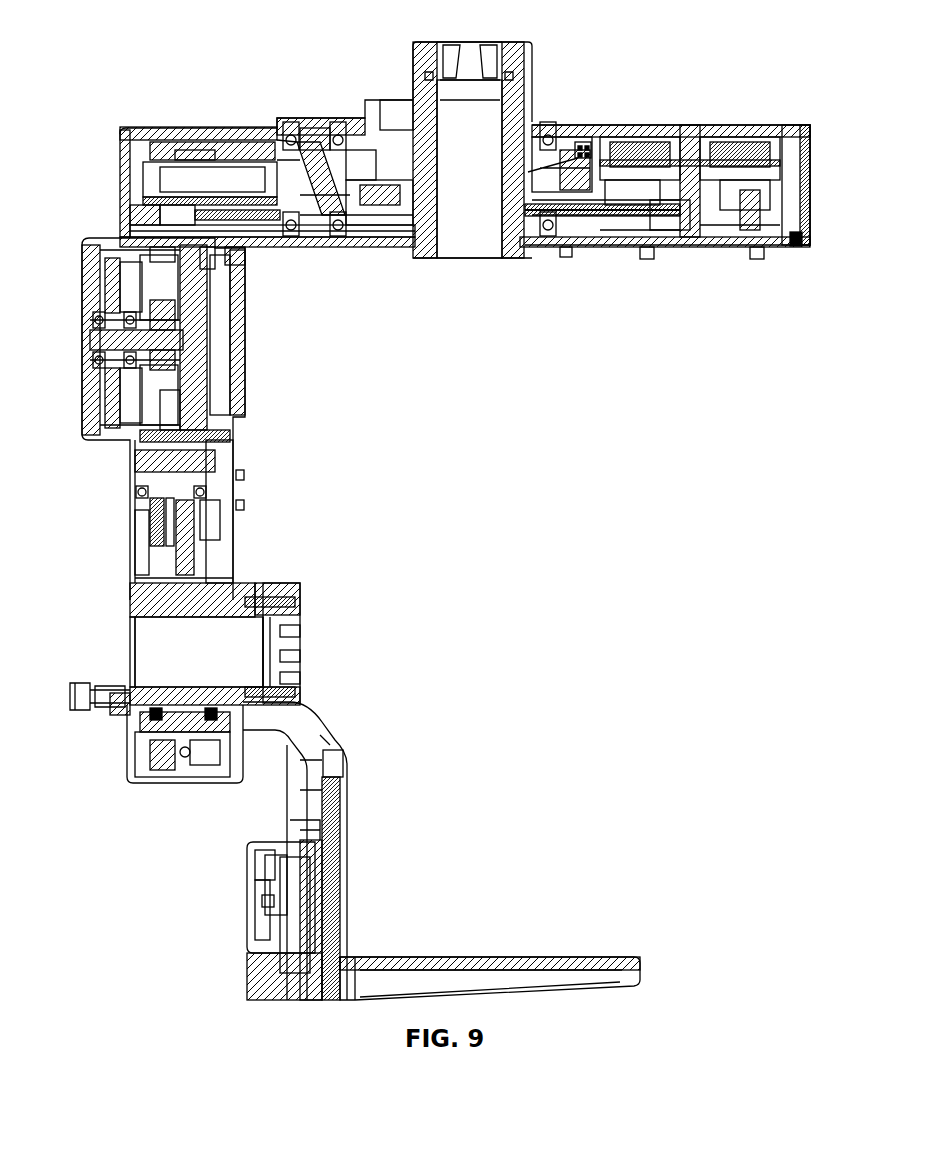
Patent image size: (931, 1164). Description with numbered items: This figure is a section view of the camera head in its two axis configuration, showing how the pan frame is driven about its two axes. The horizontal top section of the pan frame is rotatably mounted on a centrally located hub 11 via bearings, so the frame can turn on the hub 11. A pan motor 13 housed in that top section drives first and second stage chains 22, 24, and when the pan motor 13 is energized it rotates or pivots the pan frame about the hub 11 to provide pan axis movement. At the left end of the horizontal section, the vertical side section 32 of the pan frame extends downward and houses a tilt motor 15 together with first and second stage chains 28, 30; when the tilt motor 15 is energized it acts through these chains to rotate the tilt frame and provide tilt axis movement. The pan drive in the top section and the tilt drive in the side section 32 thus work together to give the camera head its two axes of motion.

The hub 11 is at (530, 78).
The pan motor 13 is at (772, 152).
The tilt motor 15 is at (130, 240).
The first stage chain 22 is at (566, 160).
The second stage chain 24 is at (580, 226).
The first stage chain 28 is at (135, 504).
The second stage chain 30 is at (195, 538).
The side section 32 is at (252, 376).